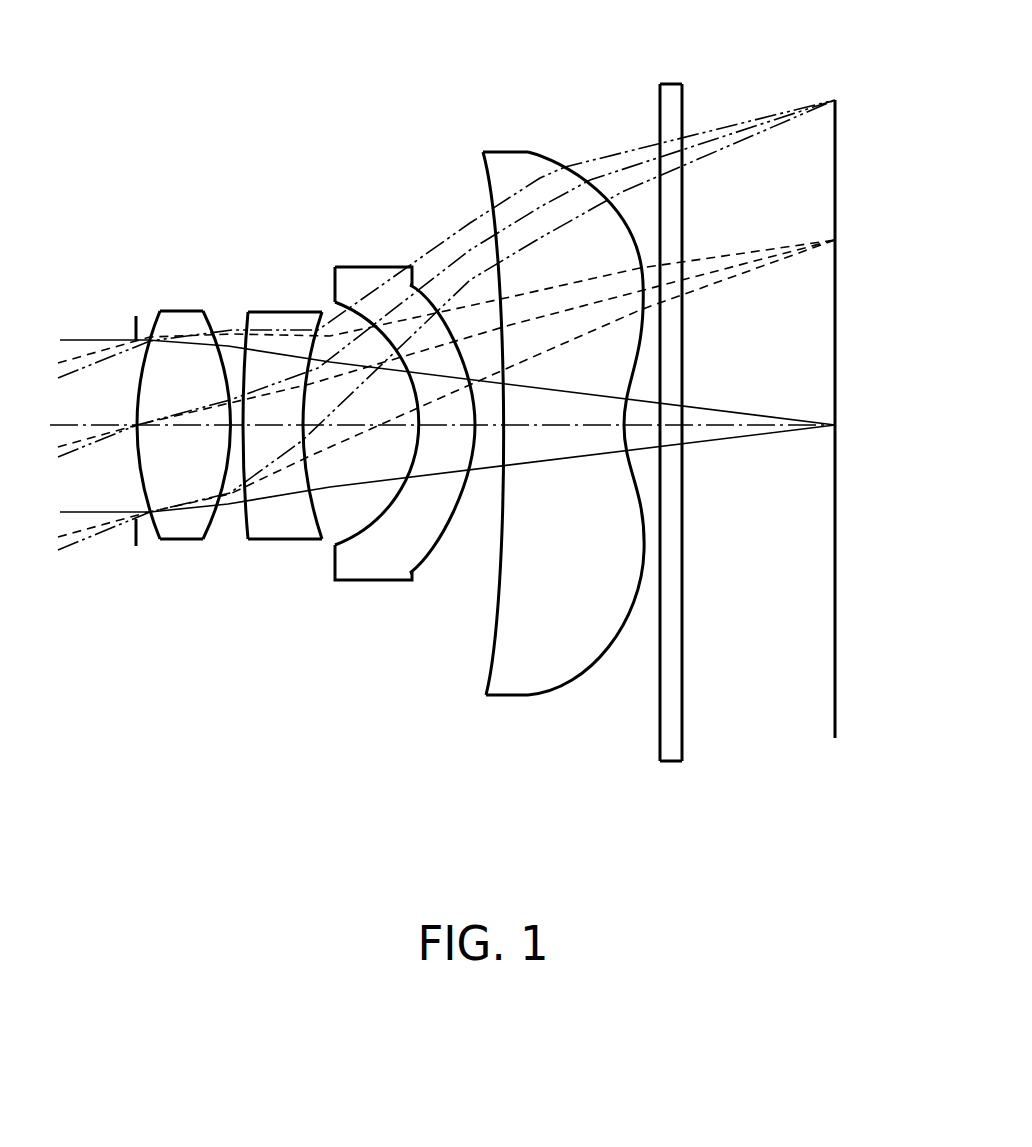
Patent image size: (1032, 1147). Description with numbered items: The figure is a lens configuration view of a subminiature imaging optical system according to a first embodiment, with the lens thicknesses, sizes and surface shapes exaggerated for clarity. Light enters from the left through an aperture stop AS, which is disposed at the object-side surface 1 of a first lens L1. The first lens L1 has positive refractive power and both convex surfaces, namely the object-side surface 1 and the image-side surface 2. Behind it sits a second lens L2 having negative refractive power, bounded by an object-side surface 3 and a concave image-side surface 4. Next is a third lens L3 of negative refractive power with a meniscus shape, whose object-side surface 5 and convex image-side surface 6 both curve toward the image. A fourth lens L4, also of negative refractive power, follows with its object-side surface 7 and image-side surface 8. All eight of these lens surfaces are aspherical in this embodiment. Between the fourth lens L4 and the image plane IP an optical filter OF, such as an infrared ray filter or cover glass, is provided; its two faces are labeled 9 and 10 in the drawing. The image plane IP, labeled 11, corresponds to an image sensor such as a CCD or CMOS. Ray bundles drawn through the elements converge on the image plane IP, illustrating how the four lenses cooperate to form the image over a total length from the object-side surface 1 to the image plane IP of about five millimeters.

The object-side surface of the first lens 1 is at (142, 316).
The image-side surface of the first lens 2 is at (217, 318).
The object-side surface of the second lens 3 is at (240, 317).
The image-side surface of the second lens 4 is at (323, 317).
The object-side surface of the third lens 5 is at (335, 267).
The image-side surface of the third lens 6 is at (415, 277).
The object-side surface of the fourth lens 7 is at (483, 170).
The image-side surface of the fourth lens 8 is at (550, 158).
The object-side surface of optical filter 9 is at (658, 100).
The image-side surface of optical filter 10 is at (683, 100).
The image plane surface 11 is at (836, 100).
The aperture stop AS is at (137, 546).
The first lens L1 is at (166, 426).
The second lens L2 is at (281, 412).
The third lens L3 is at (400, 421).
The fourth lens L4 is at (536, 424).
The optical filter OF is at (666, 427).
The image plane IP is at (851, 432).